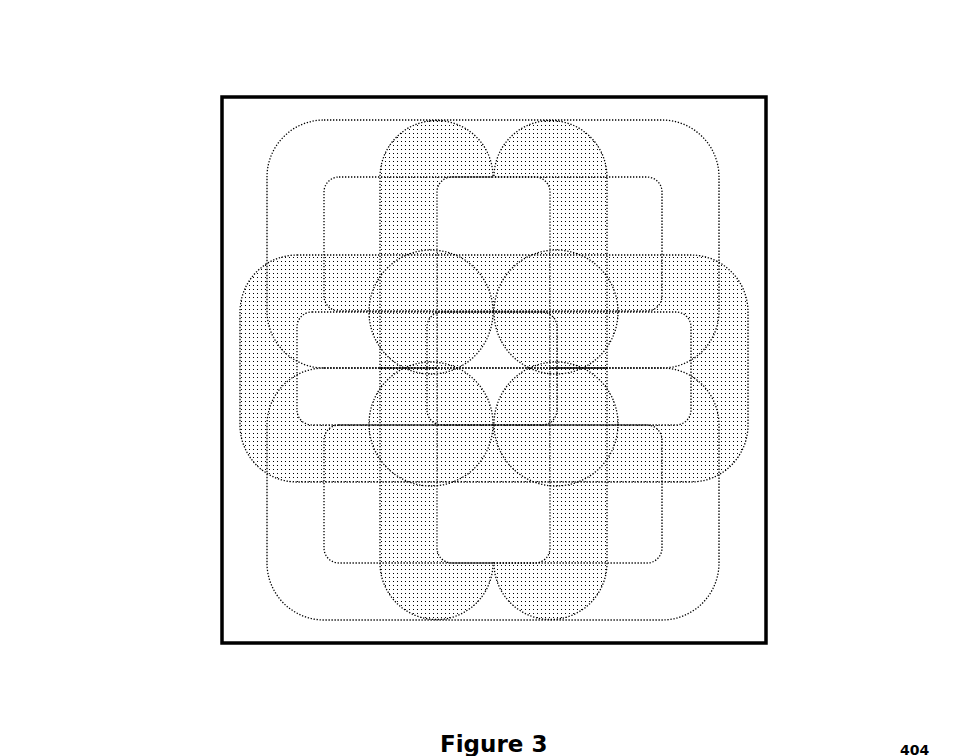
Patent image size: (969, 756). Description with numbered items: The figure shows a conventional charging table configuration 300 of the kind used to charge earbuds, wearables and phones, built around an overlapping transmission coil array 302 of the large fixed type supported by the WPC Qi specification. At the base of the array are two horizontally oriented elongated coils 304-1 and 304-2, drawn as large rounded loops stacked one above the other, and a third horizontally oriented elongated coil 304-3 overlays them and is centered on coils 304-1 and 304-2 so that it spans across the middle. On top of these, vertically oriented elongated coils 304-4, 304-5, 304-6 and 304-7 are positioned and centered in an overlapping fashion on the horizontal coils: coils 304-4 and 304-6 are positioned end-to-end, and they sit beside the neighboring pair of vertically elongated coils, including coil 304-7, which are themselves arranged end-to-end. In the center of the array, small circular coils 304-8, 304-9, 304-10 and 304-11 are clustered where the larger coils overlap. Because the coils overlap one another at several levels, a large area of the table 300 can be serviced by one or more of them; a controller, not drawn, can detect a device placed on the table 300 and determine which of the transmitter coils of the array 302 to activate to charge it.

The charging table configuration 300 is at (150, 380).
The overlapping transmission coil array 302 is at (733, 200).
The horizontally oriented elongated coil 304-1 is at (290, 173).
The horizontally oriented elongated coil 304-2 is at (293, 555).
The horizontally oriented elongated coil 304-3 is at (738, 375).
The vertically oriented elongated coil 304-4 is at (415, 153).
The vertically oriented elongated coil 304-5 is at (555, 153).
The vertically oriented elongated coil 304-6 is at (408, 588).
The vertically oriented elongated coil 304-7 is at (572, 578).
The small circular coil 304-8 is at (550, 295).
The small circular coil 304-9 is at (418, 300).
The small circular coil 304-10 is at (433, 438).
The eleventh coil 304-11 is at (552, 447).